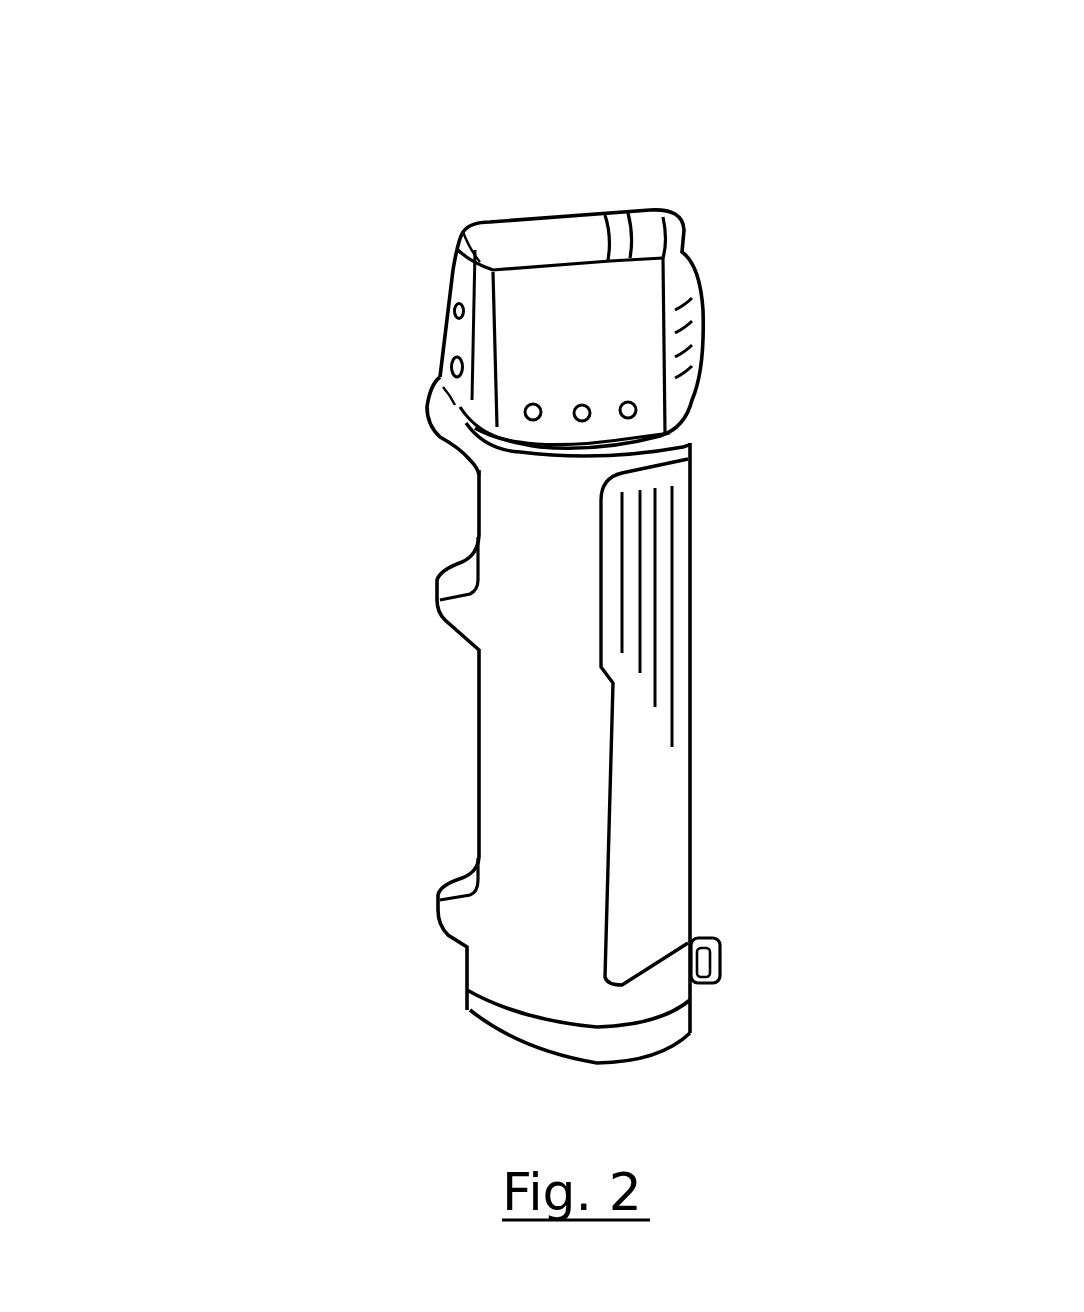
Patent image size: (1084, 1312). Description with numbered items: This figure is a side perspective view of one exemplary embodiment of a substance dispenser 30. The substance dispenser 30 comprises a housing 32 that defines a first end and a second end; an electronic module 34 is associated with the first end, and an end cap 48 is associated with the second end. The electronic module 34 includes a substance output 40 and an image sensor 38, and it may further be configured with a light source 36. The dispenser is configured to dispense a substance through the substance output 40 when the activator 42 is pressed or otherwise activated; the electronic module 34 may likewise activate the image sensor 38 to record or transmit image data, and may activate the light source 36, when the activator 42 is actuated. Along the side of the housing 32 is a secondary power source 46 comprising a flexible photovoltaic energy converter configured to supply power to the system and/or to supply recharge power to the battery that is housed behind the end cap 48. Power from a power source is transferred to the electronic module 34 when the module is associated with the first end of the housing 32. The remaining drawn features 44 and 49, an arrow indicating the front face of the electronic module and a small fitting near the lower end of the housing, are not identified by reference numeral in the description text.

The substance dispenser 30 is at (240, 168).
The housing 32 is at (508, 742).
The electronic module 34 is at (535, 232).
The light source 36 is at (608, 213).
The image sensor 38 is at (455, 307).
The substance output 40 is at (452, 365).
The activator 42 is at (690, 277).
The front face display 44 is at (600, 381).
The secondary power source 46 is at (673, 840).
The end cap 48 is at (493, 1020).
The clip attachment 49 is at (720, 963).